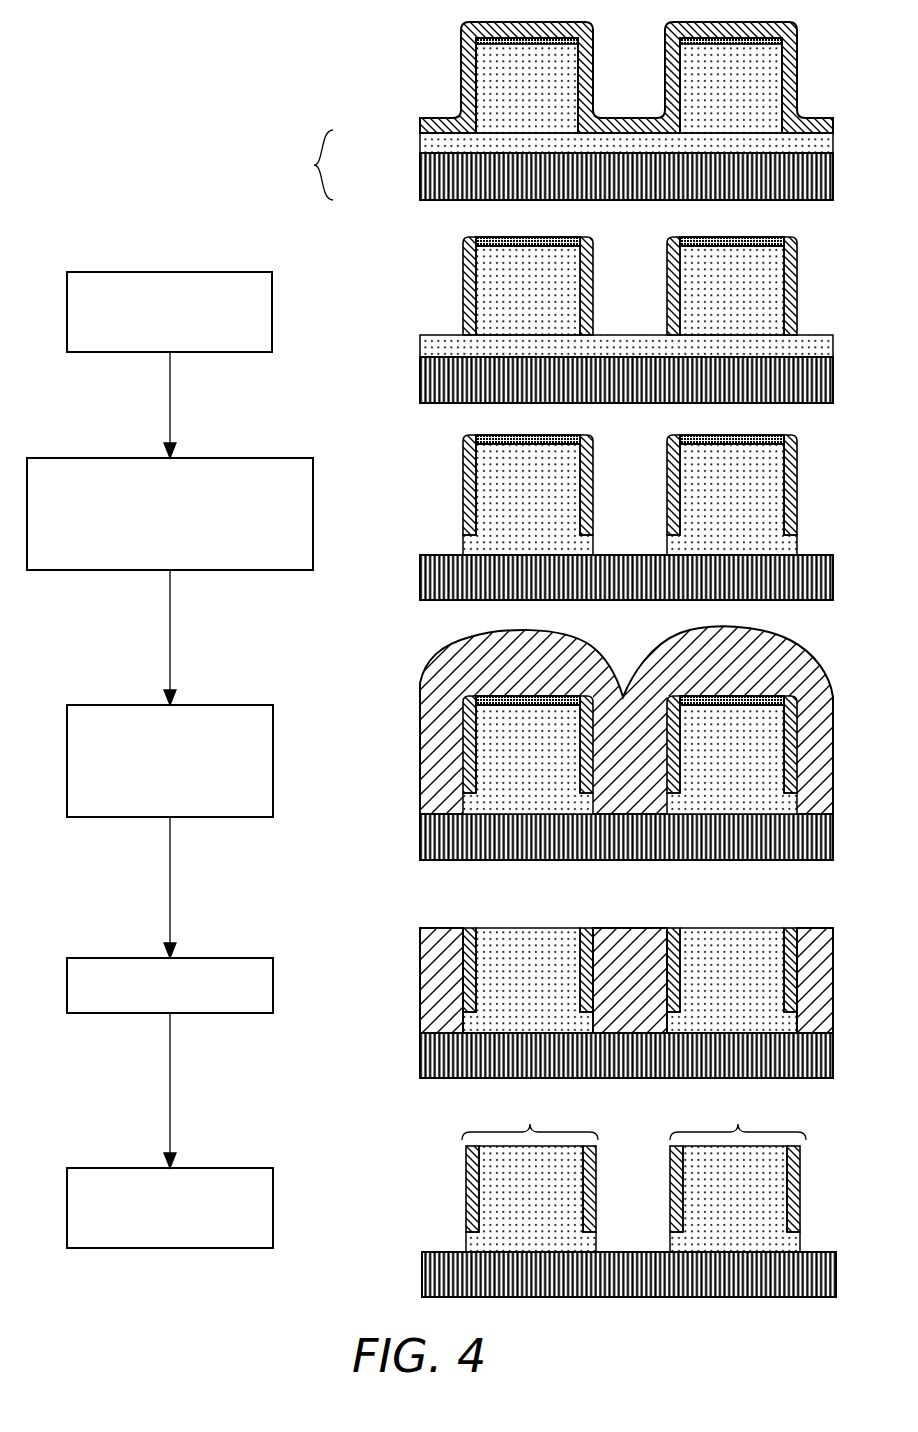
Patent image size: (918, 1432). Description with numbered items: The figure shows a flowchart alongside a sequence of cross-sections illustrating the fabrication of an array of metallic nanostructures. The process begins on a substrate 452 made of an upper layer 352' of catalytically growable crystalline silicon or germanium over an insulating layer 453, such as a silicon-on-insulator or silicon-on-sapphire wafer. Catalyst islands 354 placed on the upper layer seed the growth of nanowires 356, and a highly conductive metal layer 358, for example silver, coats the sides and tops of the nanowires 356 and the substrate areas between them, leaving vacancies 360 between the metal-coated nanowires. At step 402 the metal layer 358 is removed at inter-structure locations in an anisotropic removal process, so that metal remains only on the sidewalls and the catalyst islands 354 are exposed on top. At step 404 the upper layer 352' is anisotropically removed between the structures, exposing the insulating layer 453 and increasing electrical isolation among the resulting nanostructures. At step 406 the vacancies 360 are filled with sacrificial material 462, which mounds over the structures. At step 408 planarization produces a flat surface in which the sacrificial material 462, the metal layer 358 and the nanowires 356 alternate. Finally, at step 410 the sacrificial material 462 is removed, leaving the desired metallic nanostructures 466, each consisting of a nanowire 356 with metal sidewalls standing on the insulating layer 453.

The anisotropic metal removal step 402 is at (120, 272).
The upper substrate layer removal step 404 is at (78, 458).
The vacancy filling step 406 is at (101, 705).
The planarization step 408 is at (112, 958).
The sacrificial material removal step 410 is at (112, 1168).
The upper layer 352' is at (586, 244).
The catalyst islands 354 is at (665, 27).
The nanowires 356 is at (548, 101).
The metal layer 358 is at (420, 125).
The vacancies 360 is at (629, 92).
The substrate 452 is at (298, 165).
The insulating layer 453 is at (420, 178).
The sacrificial material 462 is at (545, 667).
The metallic nanostructures 466 is at (634, 1117).